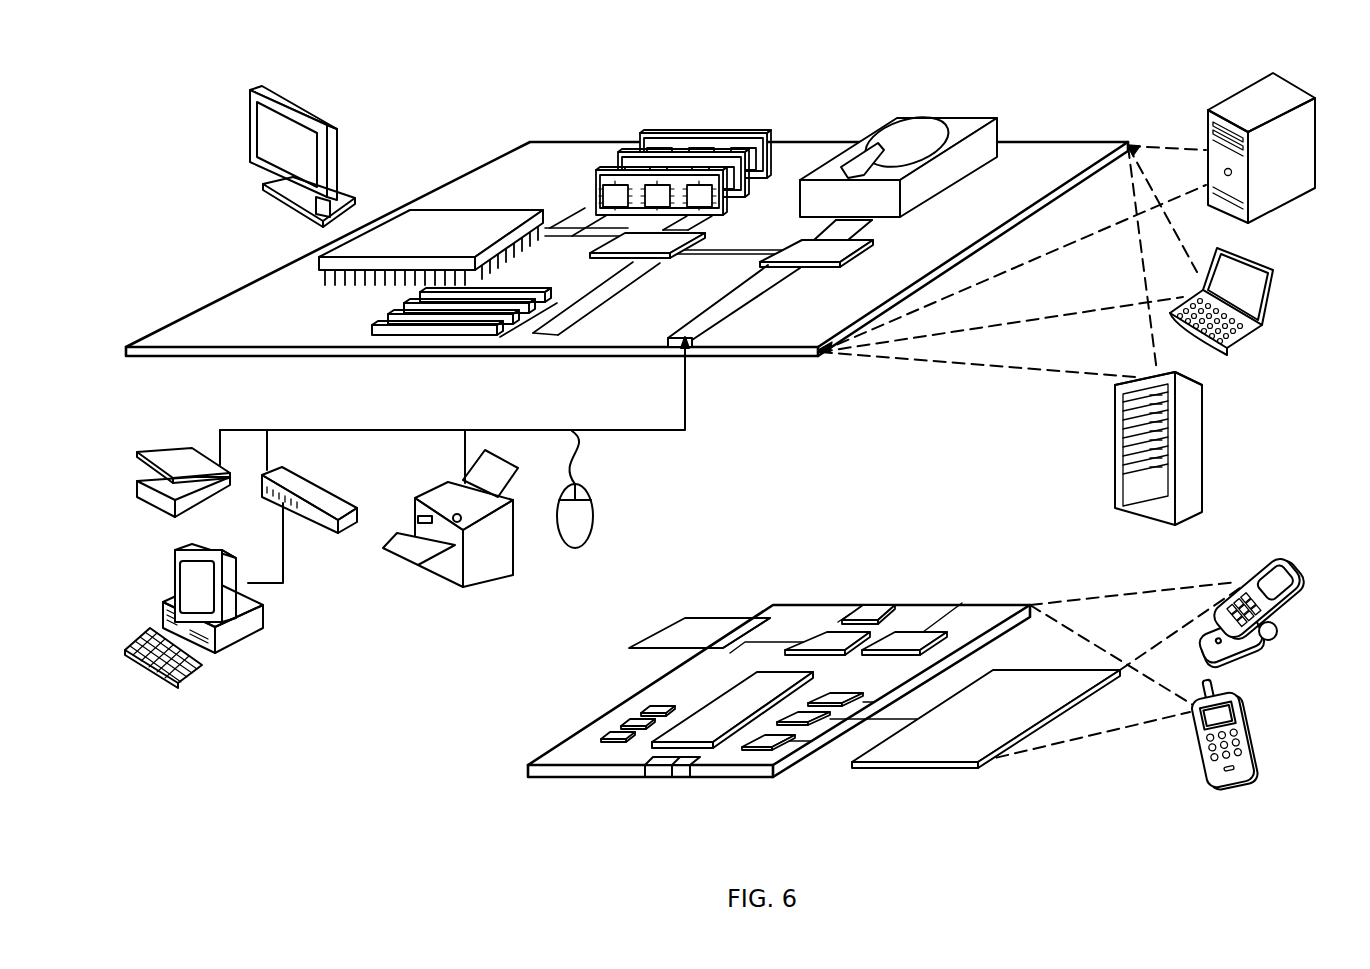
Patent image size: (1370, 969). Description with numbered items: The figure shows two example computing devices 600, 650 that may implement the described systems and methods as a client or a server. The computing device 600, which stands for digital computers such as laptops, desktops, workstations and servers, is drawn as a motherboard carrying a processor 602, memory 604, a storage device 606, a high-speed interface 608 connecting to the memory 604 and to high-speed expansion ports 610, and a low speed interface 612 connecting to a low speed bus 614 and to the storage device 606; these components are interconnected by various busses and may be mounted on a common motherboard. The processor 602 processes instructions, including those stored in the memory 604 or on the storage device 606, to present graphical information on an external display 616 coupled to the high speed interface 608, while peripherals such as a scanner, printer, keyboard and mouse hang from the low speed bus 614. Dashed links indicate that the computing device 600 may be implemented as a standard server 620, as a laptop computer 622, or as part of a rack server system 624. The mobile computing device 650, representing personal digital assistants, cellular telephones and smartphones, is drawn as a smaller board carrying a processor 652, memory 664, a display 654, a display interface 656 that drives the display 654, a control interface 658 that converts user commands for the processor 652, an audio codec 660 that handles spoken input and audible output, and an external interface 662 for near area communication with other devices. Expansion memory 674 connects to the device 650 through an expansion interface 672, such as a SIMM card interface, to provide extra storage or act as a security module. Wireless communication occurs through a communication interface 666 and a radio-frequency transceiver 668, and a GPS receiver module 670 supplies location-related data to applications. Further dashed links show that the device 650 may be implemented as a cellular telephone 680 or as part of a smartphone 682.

The computing device 600 is at (447, 113).
The processor 602 is at (327, 262).
The memory 604 is at (660, 133).
The storage device 606 is at (897, 122).
The high-speed interface 608 is at (623, 243).
The high-speed expansion ports 610 is at (393, 317).
The low speed interface 612 is at (800, 247).
The low speed bus 614 is at (697, 347).
The display 616 is at (253, 88).
The standard server 620 is at (1208, 126).
The laptop computer 622 is at (1273, 272).
The rack server system 624 is at (1113, 473).
The computing device 650 is at (500, 779).
The processor 652 is at (707, 735).
The display 654 is at (943, 751).
The display interface 656 is at (775, 742).
The control interface 658 is at (808, 720).
The audio codec 660 is at (835, 700).
The external interface 662 is at (672, 778).
The memory 664 is at (628, 723).
The communication interface 666 is at (828, 642).
The transceiver 668 is at (905, 640).
The GPS receiver module 670 is at (878, 604).
The expansion interface 672 is at (757, 616).
The expansion memory 674 is at (687, 617).
The cellular telephone 680 is at (1257, 572).
The smartphone 682 is at (1197, 737).